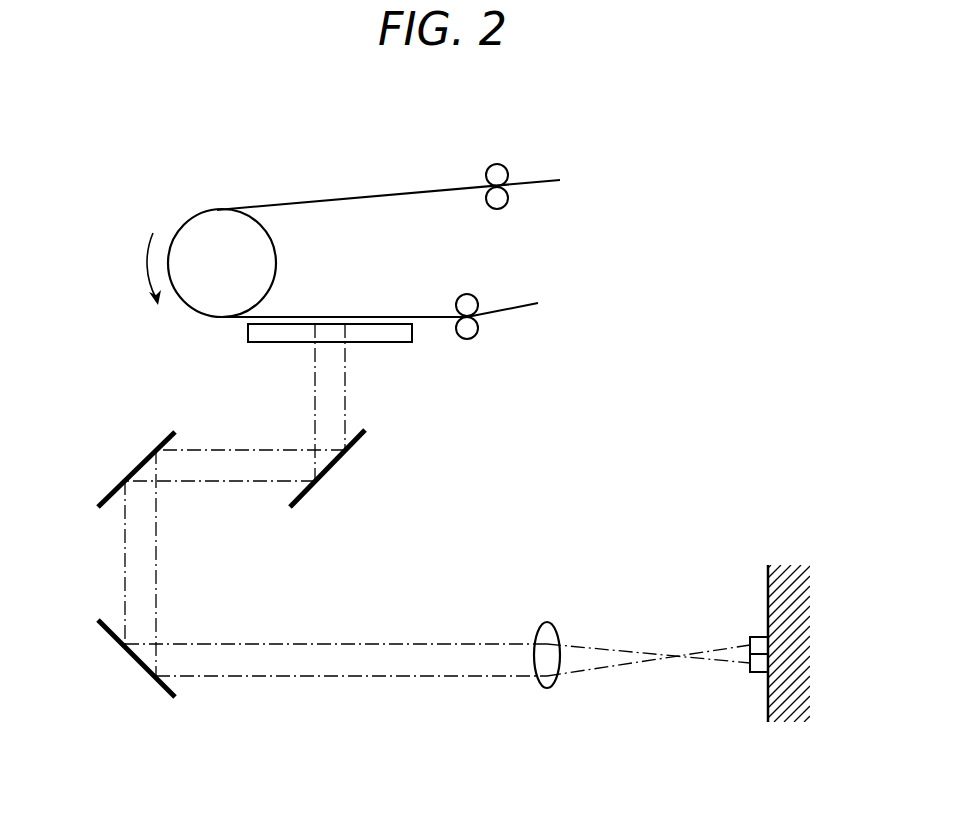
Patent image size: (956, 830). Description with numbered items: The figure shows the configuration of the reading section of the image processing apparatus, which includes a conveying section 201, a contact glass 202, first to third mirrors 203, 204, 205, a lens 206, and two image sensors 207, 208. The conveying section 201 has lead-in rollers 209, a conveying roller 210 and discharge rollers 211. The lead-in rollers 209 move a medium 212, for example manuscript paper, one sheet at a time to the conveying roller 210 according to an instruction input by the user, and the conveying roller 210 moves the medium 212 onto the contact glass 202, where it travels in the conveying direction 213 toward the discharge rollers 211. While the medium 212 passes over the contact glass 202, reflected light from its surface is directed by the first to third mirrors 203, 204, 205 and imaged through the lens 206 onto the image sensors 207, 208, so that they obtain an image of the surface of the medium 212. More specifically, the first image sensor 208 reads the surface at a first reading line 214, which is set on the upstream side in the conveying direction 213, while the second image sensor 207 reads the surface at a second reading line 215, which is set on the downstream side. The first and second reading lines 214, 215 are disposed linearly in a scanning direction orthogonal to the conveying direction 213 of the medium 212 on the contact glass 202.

The conveying section 201 is at (543, 148).
The contact glass 202 is at (248, 327).
The first mirror 203 is at (332, 470).
The second mirror 204 is at (132, 472).
The third mirror 205 is at (132, 657).
The lens 206 is at (547, 622).
The second image sensor 207 is at (757, 636).
The first image sensor 208 is at (758, 673).
The lead-in rollers 209 is at (480, 203).
The conveying roller 210 is at (193, 235).
The discharge rollers 211 is at (480, 300).
The medium 212 is at (333, 199).
The conveying direction 213 is at (148, 265).
The first reading line 214 is at (308, 342).
The second reading line 215 is at (352, 342).